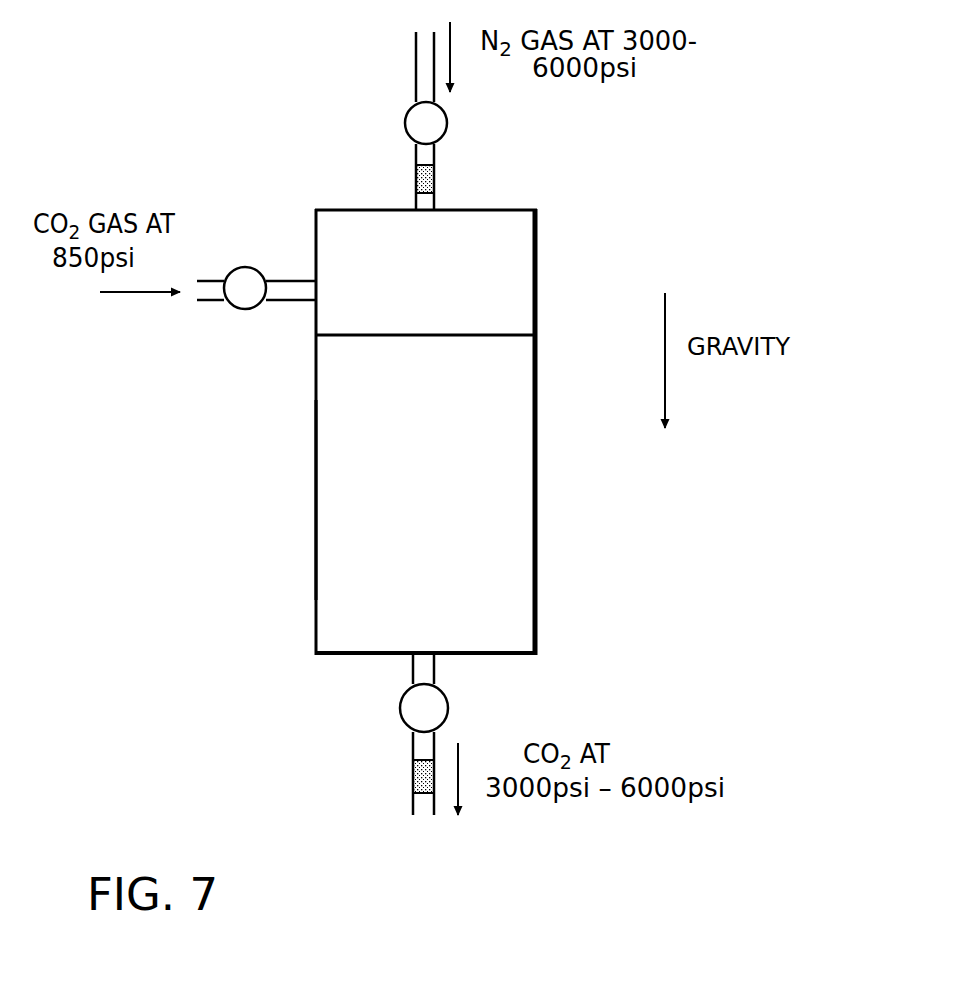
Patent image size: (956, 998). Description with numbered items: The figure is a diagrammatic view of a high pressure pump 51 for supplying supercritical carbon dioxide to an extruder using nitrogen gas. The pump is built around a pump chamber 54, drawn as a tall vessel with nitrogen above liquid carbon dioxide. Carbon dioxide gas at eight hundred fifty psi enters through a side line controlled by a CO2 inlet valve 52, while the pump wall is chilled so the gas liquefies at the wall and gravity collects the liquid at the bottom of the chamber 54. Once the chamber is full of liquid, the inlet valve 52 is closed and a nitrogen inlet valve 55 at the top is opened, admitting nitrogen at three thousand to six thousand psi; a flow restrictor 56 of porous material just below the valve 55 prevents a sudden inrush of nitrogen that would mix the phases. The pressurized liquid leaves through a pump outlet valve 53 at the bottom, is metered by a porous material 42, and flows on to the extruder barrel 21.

The extruder barrel 21 is at (434, 850).
The porous material 42 is at (413, 777).
The high pressure pump 51 is at (256, 519).
The CO2 inlet valve 52 is at (241, 267).
The pump outlet valve 53 is at (402, 700).
The pump chamber 54 is at (538, 446).
The nitrogen inlet valve 55 is at (447, 118).
The flow restrictor 56 is at (431, 176).